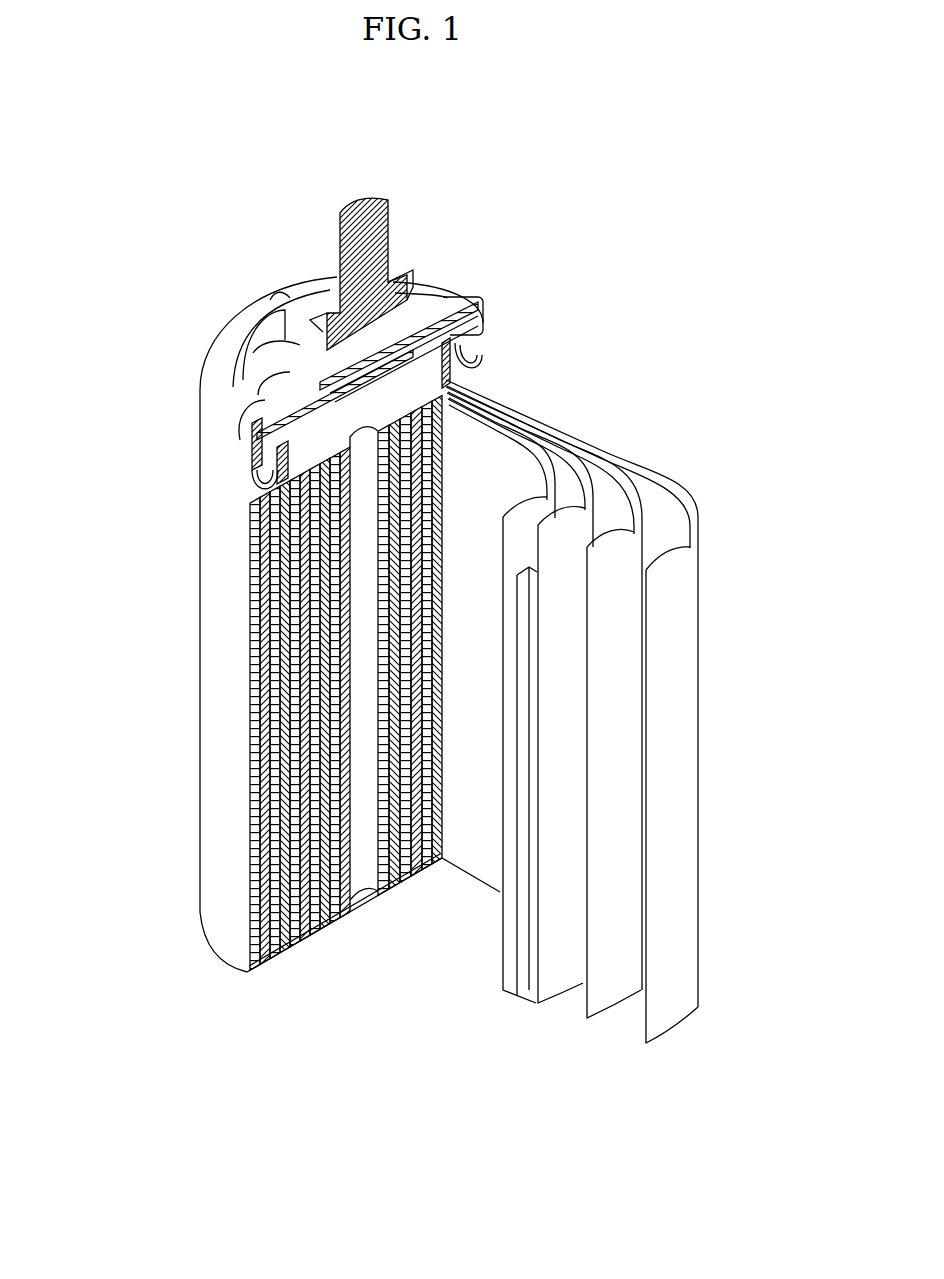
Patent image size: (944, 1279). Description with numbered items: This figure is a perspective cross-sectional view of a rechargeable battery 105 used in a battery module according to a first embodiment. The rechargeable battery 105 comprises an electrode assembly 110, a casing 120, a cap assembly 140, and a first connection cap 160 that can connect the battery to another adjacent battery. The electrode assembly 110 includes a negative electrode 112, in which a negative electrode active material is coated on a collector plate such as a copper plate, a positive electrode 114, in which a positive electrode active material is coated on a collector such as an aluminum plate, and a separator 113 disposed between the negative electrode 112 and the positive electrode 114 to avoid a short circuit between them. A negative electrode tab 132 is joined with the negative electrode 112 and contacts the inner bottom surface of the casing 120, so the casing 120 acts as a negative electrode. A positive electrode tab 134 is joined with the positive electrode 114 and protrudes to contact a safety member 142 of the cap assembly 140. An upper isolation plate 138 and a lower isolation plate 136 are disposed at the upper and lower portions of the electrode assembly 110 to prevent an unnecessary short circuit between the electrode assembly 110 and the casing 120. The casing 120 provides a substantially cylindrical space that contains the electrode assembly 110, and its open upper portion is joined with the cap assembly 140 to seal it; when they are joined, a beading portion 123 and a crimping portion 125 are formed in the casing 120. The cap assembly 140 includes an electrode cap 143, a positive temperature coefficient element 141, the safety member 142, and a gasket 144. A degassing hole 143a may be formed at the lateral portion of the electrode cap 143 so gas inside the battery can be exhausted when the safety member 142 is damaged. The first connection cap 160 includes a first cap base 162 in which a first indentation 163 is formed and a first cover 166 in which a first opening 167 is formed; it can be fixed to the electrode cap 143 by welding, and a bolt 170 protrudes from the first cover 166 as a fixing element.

The rechargeable battery 105 is at (386, 112).
The electrode assembly 110 is at (474, 763).
The negative electrode 112 is at (510, 1000).
The separator 113 is at (557, 995).
The positive electrode 114 is at (605, 1007).
The casing 120 is at (203, 626).
The beading portion 123 is at (263, 470).
The crimping portion 125 is at (253, 447).
The negative electrode tab 132 is at (522, 948).
The positive electrode tab 134 is at (500, 405).
The lower isolation plate 136 is at (340, 907).
The upper isolation plate 138 is at (247, 487).
The cap assembly 140 is at (487, 327).
The positive temperature coefficient element 141 is at (482, 320).
The safety member 142 is at (480, 333).
The electrode cap 143 is at (483, 307).
The degassing hole 143a is at (257, 404).
The gasket 144 is at (482, 360).
The first connection cap 160 is at (186, 318).
The first cap base 162 is at (253, 353).
The first indentation 163 is at (267, 387).
The first cover 166 is at (290, 300).
The first opening 167 is at (287, 317).
The bolt 170 is at (392, 198).